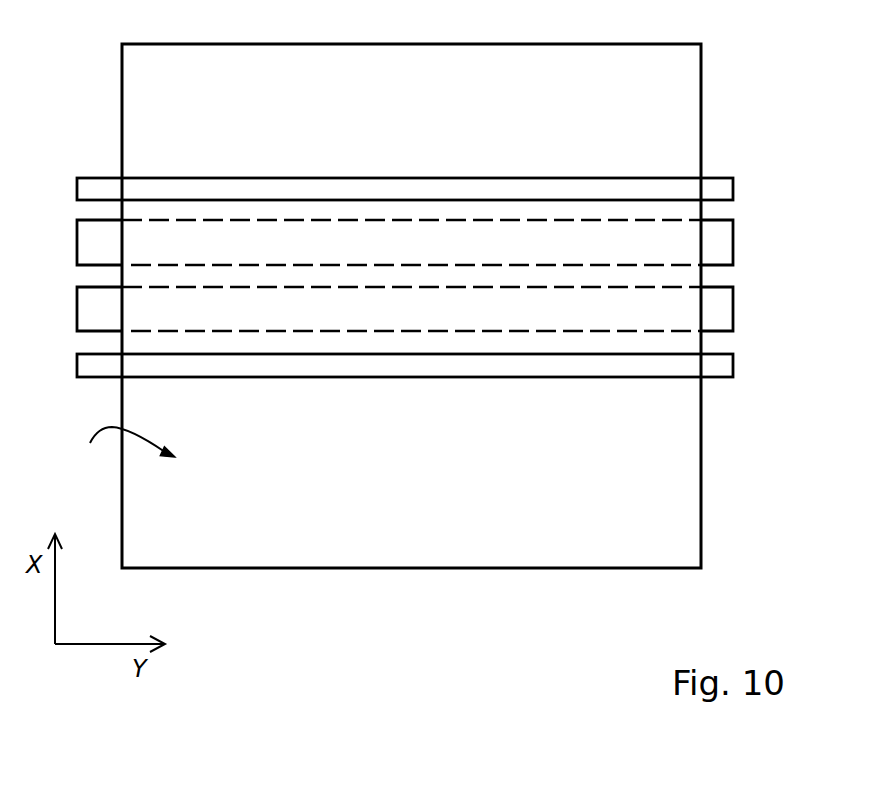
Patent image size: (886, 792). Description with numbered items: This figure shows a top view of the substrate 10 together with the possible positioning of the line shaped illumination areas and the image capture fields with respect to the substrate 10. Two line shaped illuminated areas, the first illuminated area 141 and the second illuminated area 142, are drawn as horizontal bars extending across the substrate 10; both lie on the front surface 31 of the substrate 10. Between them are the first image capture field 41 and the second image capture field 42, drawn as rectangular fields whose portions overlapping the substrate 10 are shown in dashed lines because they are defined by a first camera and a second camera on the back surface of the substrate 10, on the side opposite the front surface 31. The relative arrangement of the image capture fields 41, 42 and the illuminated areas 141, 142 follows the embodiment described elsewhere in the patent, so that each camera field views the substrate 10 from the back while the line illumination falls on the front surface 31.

The substrate 10 is at (400, 481).
The second illuminated area 142 is at (95, 186).
The first illuminated area 141 is at (723, 367).
The second image capture field 42 is at (724, 238).
The first image capture field 41 is at (92, 302).
The front surface 31 is at (122, 452).